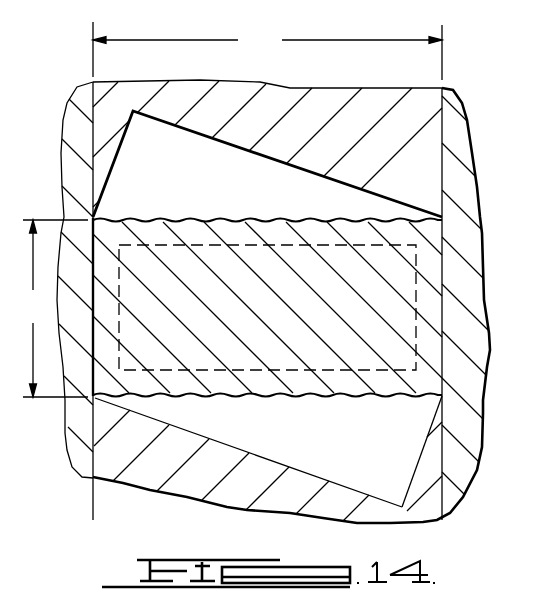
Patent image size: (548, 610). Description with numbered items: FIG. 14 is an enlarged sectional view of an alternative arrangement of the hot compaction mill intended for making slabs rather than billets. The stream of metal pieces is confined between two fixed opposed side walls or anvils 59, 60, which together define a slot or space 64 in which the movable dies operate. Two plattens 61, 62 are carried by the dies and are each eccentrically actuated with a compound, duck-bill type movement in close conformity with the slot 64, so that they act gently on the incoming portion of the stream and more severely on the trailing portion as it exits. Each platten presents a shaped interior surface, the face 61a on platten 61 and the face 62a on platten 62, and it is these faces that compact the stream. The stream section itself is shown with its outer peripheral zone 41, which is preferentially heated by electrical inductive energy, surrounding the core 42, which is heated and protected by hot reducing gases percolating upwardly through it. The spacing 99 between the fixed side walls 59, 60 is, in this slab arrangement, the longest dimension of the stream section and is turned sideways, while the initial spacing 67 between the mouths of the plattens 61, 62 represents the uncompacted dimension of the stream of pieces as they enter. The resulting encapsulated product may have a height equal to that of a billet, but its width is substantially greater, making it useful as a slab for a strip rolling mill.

The outer peripheral zone 41 is at (188, 233).
The core 42 is at (250, 267).
The side wall 59 is at (467, 279).
The side wall 60 is at (80, 448).
The platten 61 is at (195, 485).
The interior surface 61a is at (275, 460).
The platten 62 is at (318, 103).
The interior surface 62a is at (224, 153).
The slot 64 is at (433, 303).
The initial spacing 67 is at (54, 308).
The spacing 99 is at (267, 51).